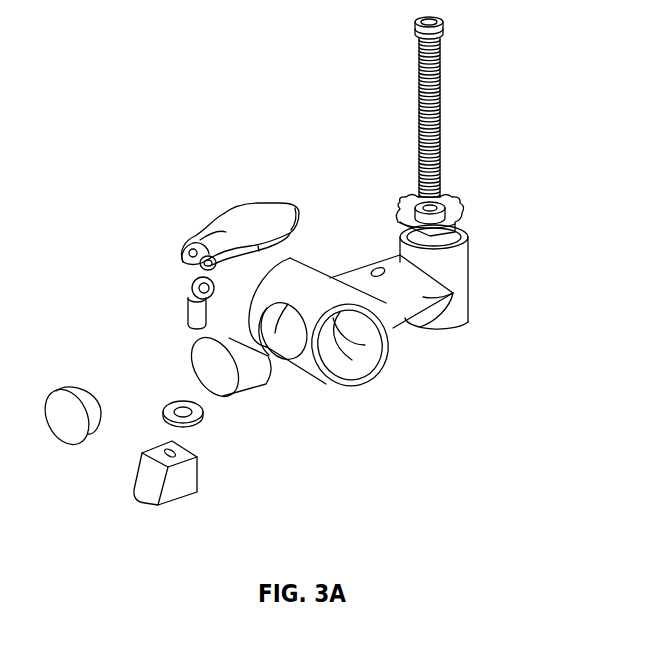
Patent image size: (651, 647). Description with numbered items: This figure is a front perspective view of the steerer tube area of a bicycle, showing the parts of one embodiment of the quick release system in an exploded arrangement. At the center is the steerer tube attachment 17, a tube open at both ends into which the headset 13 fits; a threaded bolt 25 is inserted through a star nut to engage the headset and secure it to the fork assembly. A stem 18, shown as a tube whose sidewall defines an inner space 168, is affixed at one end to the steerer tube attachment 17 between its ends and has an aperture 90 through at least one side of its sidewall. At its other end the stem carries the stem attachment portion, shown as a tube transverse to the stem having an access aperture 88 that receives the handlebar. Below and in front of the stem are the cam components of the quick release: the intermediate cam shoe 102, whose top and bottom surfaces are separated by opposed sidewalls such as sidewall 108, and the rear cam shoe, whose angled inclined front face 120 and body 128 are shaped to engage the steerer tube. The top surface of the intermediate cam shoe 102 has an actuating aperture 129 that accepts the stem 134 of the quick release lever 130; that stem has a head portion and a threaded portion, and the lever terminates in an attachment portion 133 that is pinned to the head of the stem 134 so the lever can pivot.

The headset 13 is at (416, 205).
The steerer tube attachment 17 is at (456, 268).
The stem 18 is at (458, 322).
The threaded bolt 25 is at (441, 72).
The access aperture 88 is at (274, 308).
The aperture 90 is at (374, 268).
The intermediate cam shoe 102 is at (95, 505).
The sidewall 108 is at (182, 483).
The angled inclined front face 120 is at (203, 373).
The body 128 is at (193, 369).
The actuating aperture 129 is at (170, 452).
The quick release lever 130 is at (196, 245).
The attachment portion 133 is at (172, 252).
The stem 134 is at (195, 315).
The inner space 168 is at (348, 327).